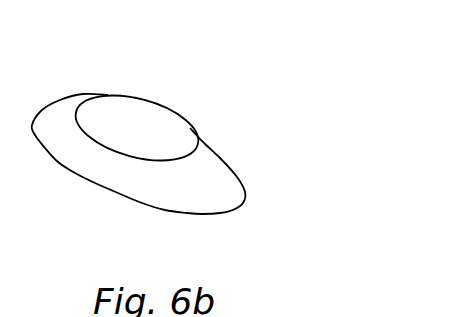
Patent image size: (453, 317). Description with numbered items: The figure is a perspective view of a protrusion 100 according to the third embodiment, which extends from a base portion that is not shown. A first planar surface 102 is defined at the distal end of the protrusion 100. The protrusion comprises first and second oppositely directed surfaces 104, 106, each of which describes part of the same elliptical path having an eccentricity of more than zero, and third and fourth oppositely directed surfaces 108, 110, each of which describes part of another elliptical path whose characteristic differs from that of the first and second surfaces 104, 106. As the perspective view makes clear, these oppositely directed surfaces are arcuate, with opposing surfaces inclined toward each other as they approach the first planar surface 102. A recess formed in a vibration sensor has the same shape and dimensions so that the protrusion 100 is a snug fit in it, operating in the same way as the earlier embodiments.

The protrusion 100 is at (200, 73).
The first planar surface 102 is at (170, 128).
The first oppositely directed surface 104 is at (110, 167).
The second oppositely directed surface 106 is at (190, 130).
The third oppositely directed surface 108 is at (58, 117).
The fourth oppositely directed surface 110 is at (217, 190).